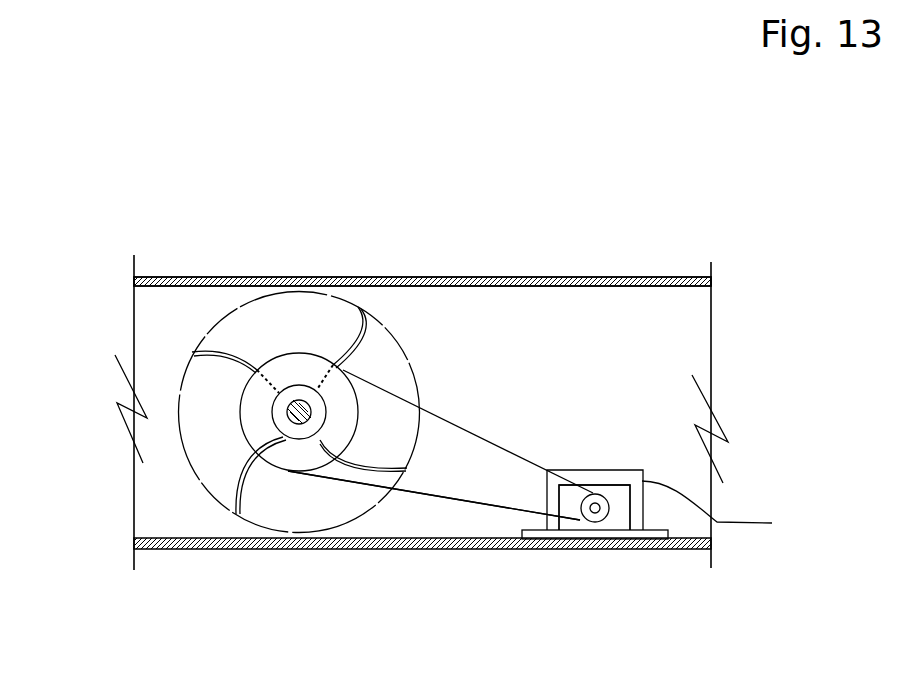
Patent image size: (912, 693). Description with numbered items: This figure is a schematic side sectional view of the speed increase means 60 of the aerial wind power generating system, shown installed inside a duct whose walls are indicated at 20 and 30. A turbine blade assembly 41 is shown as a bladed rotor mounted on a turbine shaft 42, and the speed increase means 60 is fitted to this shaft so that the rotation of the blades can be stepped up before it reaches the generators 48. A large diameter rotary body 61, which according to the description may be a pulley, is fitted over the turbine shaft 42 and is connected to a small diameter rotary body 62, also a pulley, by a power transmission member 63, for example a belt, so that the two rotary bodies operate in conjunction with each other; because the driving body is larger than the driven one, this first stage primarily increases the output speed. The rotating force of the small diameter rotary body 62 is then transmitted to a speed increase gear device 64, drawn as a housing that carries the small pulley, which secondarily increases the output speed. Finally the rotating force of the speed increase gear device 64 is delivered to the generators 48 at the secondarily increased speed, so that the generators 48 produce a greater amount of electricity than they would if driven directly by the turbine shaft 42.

The duct 20 is at (400, 277).
The duct wall 30 is at (477, 317).
The hard turbine blade assembly 41 is at (218, 294).
The turbine shaft 42 is at (299, 426).
The generators 48 is at (726, 513).
The speed increase means 60 is at (567, 437).
The large diameter rotary body 61 is at (367, 478).
The small diameter rotary body 62 is at (568, 515).
The power transmission member 63 is at (459, 499).
The speed increase gear device 64 is at (618, 513).